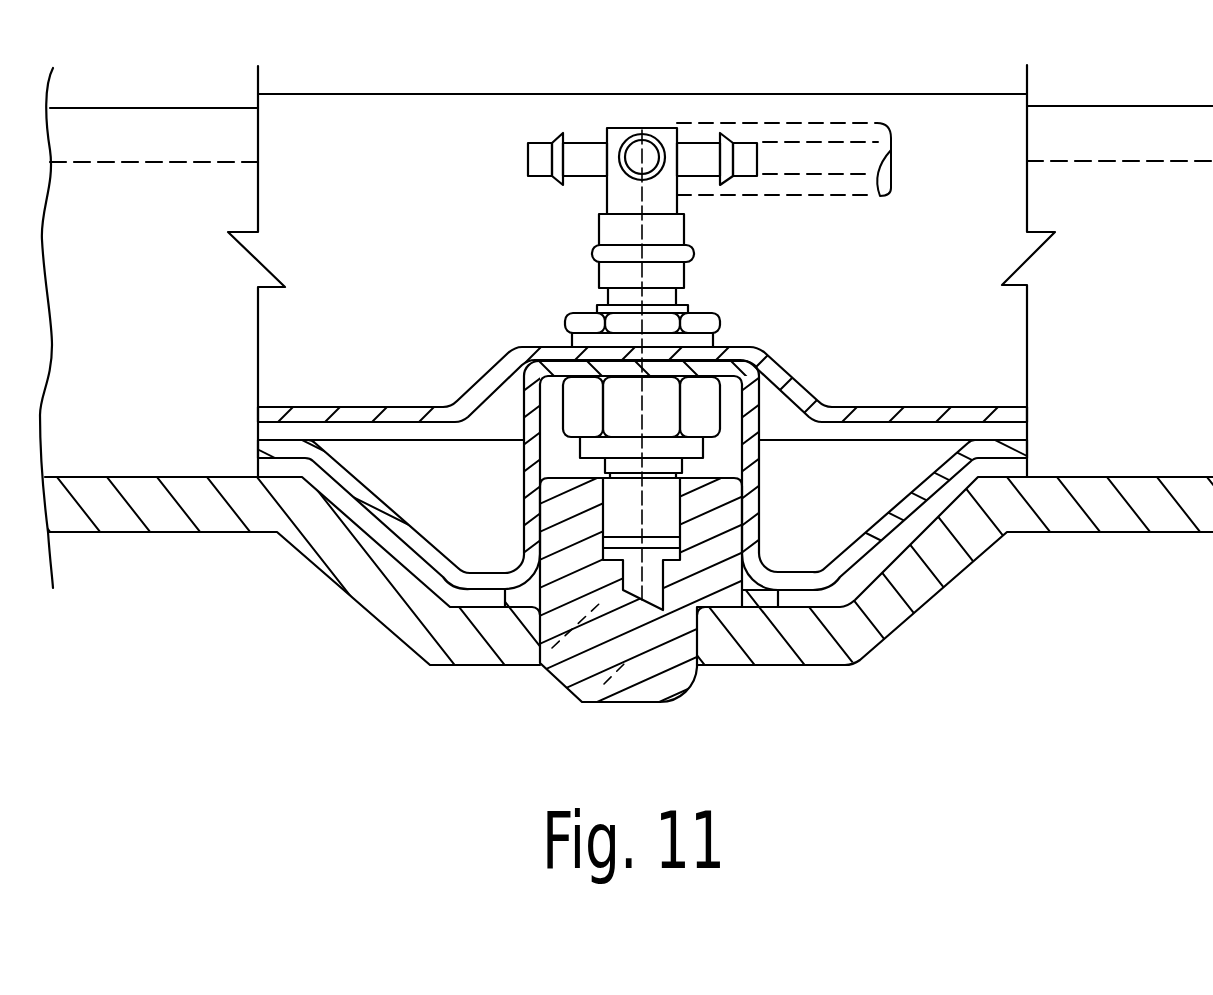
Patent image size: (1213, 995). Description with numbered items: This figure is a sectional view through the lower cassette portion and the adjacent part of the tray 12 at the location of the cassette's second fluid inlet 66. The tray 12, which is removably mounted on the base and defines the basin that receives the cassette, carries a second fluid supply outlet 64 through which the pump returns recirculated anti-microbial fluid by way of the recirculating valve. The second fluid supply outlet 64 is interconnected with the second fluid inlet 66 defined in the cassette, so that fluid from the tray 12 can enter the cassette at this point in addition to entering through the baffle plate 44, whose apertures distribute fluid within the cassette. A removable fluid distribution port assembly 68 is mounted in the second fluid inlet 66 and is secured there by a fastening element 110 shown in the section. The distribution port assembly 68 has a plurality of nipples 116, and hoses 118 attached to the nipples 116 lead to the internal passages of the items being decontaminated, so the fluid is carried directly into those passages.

The tray 12 is at (933, 562).
The baffle plate 44 is at (1000, 405).
The second fluid supply outlet 64 is at (713, 585).
The second fluid inlet 66 is at (728, 331).
The fluid distribution port assembly 68 is at (702, 112).
The hex nut 110 is at (657, 408).
The nipples 116 is at (642, 157).
The hoses 118 is at (830, 130).